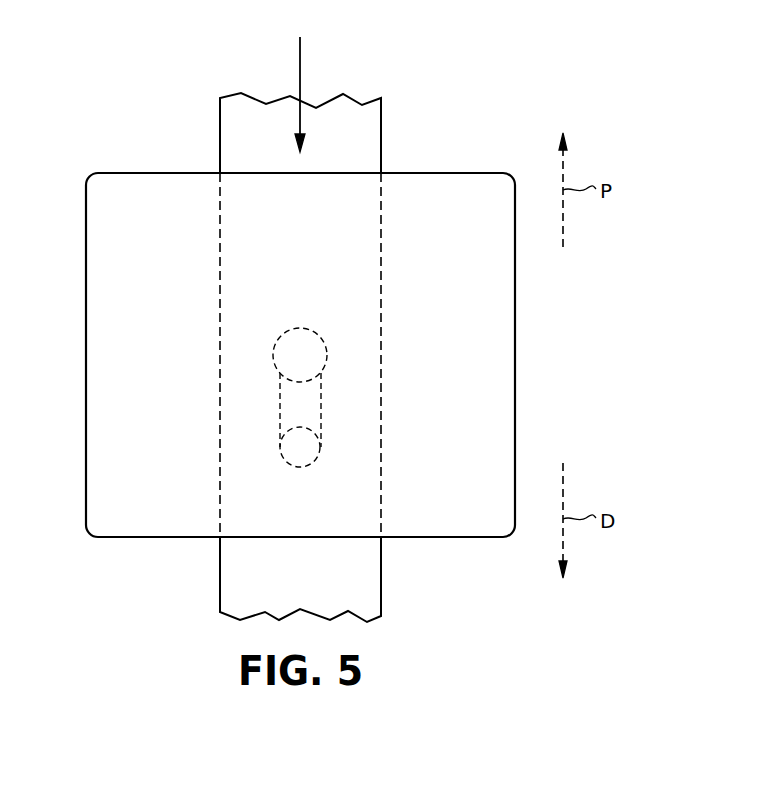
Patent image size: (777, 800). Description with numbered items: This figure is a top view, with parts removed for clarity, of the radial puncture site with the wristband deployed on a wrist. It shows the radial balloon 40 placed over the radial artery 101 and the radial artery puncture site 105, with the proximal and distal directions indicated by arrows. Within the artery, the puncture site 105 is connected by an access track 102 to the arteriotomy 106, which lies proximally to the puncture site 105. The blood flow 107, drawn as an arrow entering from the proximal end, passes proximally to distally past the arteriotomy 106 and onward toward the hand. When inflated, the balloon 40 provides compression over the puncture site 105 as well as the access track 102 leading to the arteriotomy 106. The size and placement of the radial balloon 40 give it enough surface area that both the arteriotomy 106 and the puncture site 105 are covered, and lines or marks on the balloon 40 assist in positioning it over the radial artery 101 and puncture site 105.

The radial balloon 40 is at (86, 357).
The radial artery 101 is at (381, 135).
The access track 102 is at (321, 410).
The radial artery puncture site 105 is at (300, 467).
The arteriotomy 106 is at (302, 328).
The blood flow 107 is at (300, 70).